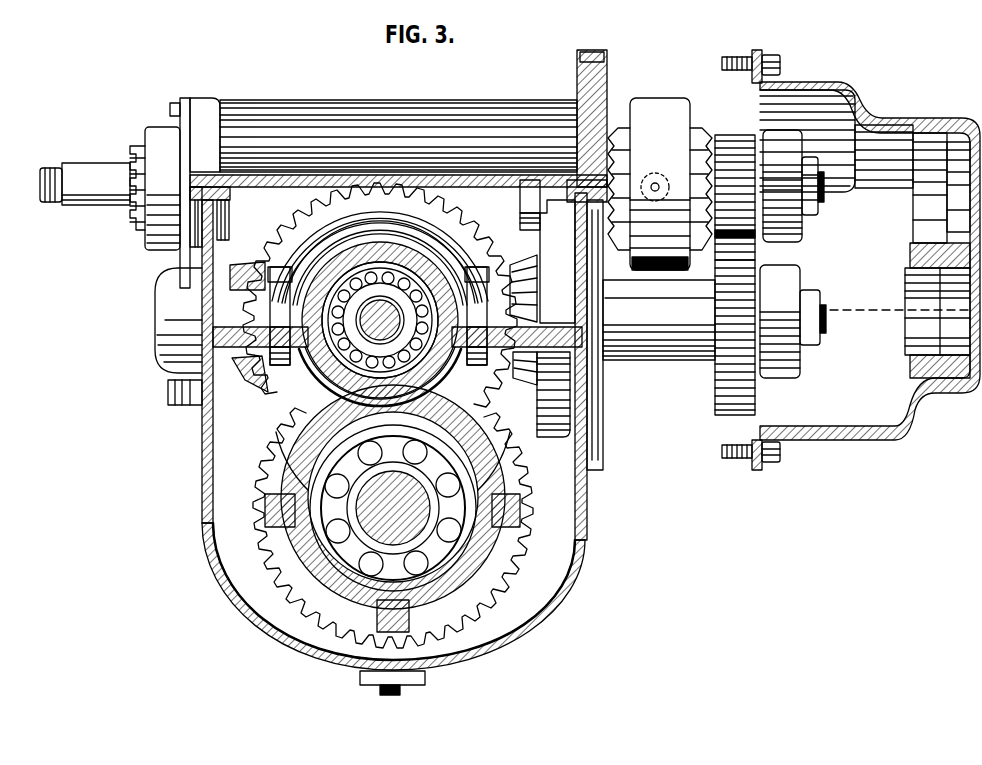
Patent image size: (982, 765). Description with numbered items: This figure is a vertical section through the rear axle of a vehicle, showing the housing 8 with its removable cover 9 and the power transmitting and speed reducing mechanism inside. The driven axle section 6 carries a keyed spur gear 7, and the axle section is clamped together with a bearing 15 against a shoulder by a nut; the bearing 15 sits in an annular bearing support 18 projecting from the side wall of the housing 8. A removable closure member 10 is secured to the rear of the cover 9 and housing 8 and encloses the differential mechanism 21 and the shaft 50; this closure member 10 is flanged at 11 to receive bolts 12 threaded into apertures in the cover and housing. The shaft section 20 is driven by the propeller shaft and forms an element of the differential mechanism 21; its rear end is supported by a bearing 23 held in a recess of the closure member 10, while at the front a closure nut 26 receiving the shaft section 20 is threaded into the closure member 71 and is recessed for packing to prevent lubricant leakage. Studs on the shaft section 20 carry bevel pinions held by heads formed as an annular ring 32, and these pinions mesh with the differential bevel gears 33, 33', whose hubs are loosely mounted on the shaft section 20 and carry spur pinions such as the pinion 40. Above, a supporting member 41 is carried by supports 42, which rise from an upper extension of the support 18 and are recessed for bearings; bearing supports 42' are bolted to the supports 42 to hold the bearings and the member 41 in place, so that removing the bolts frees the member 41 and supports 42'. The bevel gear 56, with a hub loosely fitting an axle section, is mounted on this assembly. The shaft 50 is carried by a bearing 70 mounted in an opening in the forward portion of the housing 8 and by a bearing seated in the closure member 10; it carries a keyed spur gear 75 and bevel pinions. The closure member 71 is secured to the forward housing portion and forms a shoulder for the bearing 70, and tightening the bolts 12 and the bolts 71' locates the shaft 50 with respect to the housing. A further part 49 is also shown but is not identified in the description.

The driven axle section 6 is at (390, 507).
The spur gear 7 is at (492, 590).
The housing 8 is at (578, 576).
The removable cover 9 is at (334, 100).
The removable closure member 10 is at (936, 118).
The flange 11 is at (757, 52).
The bolt 12 is at (782, 64).
The bearing 15 is at (470, 442).
The annular bearing support 18 is at (265, 510).
The shaft section 20 is at (85, 184).
The differential mechanism 21 is at (655, 140).
The bearing 23 is at (793, 186).
The closure nut 26 is at (138, 146).
The annular ring 32 is at (660, 184).
The differential bevel gear 33 is at (706, 165).
The differential bevel gear 33' is at (623, 162).
The pinion 40 is at (740, 145).
The supporting member 41 is at (384, 312).
The support 42 is at (358, 318).
The bearing support 42' is at (372, 285).
The bearing race 49 is at (392, 314).
The shaft 50 is at (659, 320).
The bevel gear 56 is at (483, 233).
The bearing 70 is at (793, 321).
The closure member 71 is at (158, 320).
The bolt 71' is at (160, 392).
The spur gear 75 is at (720, 382).